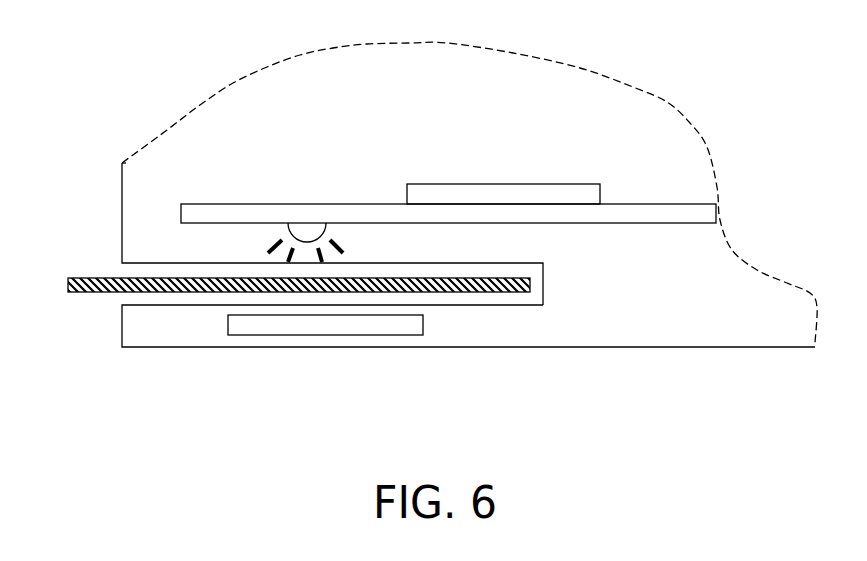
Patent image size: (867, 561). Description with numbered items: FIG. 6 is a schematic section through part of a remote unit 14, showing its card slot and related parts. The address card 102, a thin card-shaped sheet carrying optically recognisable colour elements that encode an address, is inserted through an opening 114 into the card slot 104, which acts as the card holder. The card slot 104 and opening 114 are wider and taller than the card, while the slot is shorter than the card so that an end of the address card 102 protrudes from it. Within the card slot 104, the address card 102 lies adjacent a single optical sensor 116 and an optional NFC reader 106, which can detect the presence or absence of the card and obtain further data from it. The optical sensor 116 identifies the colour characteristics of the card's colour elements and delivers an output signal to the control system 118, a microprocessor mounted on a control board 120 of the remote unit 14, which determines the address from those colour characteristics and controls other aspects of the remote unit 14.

The remote unit 14 is at (402, 134).
The address card 102 is at (102, 293).
The card slot 104 is at (192, 296).
The NFC reader 106 is at (320, 326).
The opening 114 is at (122, 270).
The optical sensor 116 is at (305, 228).
The control system 118 is at (558, 194).
The control board 120 is at (624, 213).